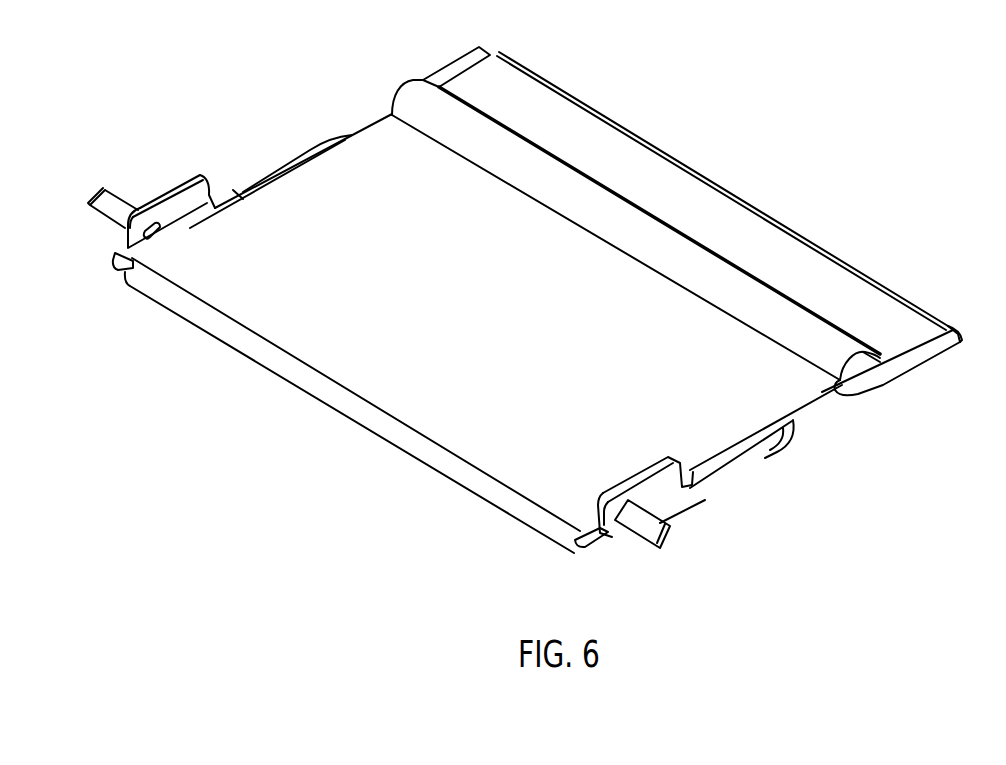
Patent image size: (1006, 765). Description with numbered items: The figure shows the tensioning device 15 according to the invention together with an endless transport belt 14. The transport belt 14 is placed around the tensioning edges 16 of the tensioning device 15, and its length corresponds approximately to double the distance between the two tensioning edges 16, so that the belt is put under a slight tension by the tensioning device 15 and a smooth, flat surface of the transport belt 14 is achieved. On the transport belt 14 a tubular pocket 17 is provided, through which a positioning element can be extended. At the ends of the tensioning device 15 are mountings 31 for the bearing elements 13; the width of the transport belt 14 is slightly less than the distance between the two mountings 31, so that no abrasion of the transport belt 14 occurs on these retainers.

The bearing element 13 is at (640, 525).
The transport belt 14 is at (368, 355).
The tensioning device 15 is at (908, 358).
The tensioning edge 16 is at (958, 332).
The tubular pocket 17 is at (698, 265).
The mounting 31 is at (177, 210).